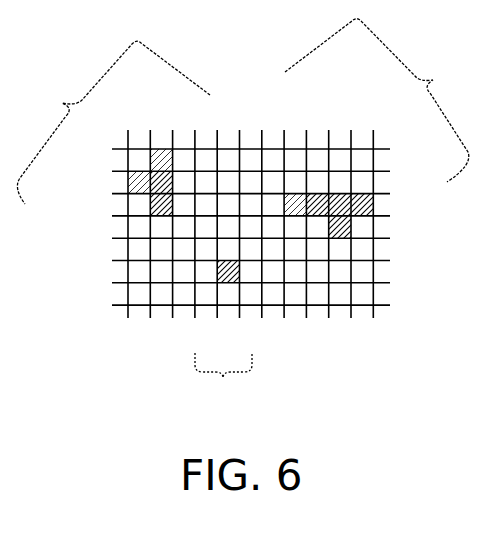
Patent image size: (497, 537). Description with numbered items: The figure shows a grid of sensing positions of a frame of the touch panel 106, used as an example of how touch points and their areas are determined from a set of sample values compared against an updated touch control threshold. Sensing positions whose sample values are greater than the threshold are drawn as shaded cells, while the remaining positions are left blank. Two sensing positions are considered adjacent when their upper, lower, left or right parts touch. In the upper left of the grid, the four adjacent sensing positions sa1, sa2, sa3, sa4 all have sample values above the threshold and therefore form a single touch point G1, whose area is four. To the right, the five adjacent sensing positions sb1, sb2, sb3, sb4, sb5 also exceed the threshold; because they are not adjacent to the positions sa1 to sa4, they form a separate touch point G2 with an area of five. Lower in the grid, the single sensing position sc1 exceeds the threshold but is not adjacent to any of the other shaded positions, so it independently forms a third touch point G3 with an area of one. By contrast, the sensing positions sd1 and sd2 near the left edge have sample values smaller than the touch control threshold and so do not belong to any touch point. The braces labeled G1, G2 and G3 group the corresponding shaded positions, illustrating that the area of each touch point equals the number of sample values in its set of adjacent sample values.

The touch panel 106 is at (350, 339).
The sensing position sa1 is at (161, 147).
The sensing position sa2 is at (132, 184).
The sensing position sa3 is at (172, 182).
The sensing position sa4 is at (151, 211).
The sensing position sb1 is at (293, 192).
The sensing position sb2 is at (313, 191).
The sensing position sb3 is at (338, 191).
The sensing position sb4 is at (367, 192).
The sensing position sb5 is at (346, 232).
The sensing position sc1 is at (227, 275).
The sensing position sd1 is at (139, 294).
The sensing position sd2 is at (139, 272).
The touch point G1 is at (113, 122).
The touch point G2 is at (381, 100).
The touch point G3 is at (223, 386).